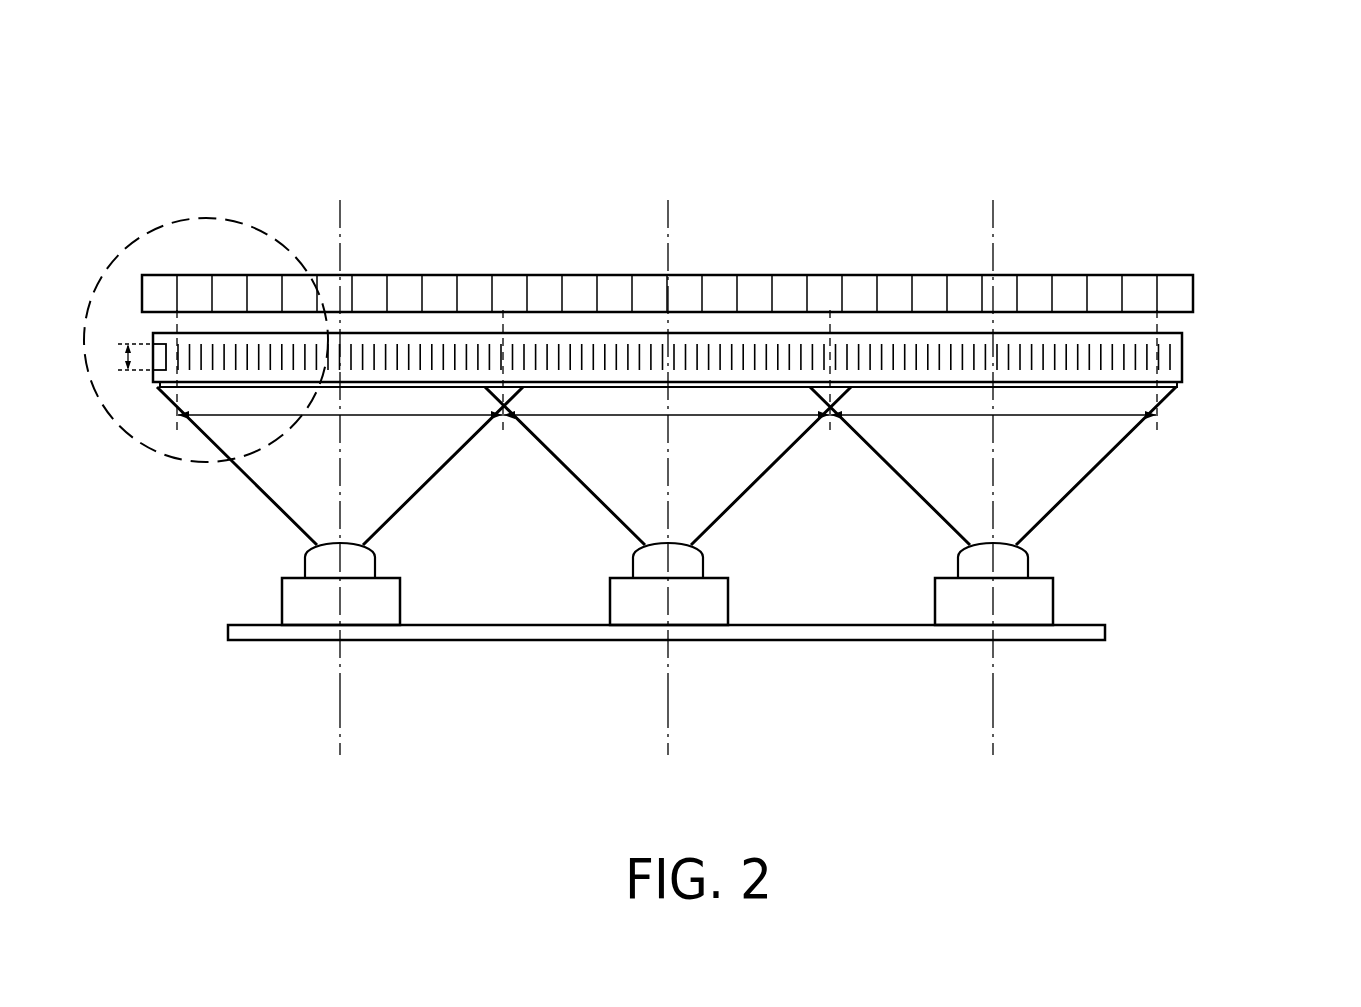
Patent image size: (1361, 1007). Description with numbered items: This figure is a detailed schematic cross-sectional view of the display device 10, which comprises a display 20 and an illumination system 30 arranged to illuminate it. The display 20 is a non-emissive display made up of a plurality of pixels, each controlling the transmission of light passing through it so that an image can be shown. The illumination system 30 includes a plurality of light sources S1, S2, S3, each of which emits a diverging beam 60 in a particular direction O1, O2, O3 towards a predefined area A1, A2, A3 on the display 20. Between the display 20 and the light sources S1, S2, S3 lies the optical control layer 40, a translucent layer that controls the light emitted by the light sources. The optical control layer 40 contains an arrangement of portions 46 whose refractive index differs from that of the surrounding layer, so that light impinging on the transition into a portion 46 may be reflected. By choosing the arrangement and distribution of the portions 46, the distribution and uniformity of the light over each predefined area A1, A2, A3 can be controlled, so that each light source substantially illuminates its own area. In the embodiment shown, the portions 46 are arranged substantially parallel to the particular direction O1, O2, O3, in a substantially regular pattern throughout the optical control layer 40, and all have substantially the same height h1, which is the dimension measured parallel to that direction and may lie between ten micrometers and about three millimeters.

The display device 10 is at (1002, 107).
The display 20 is at (1212, 294).
The optical control layer 40 is at (1212, 353).
The portions 46 is at (158, 366).
The height h1 is at (122, 355).
The illumination system 30 is at (1288, 333).
The diverging beam 60 is at (423, 462).
The light source S1 is at (365, 563).
The light source S2 is at (693, 563).
The light source S3 is at (1018, 563).
The particular direction O1 is at (342, 727).
The particular direction O2 is at (670, 727).
The particular direction O3 is at (995, 727).
The predefined area A1 is at (385, 415).
The predefined area A2 is at (713, 415).
The predefined area A3 is at (1038, 415).